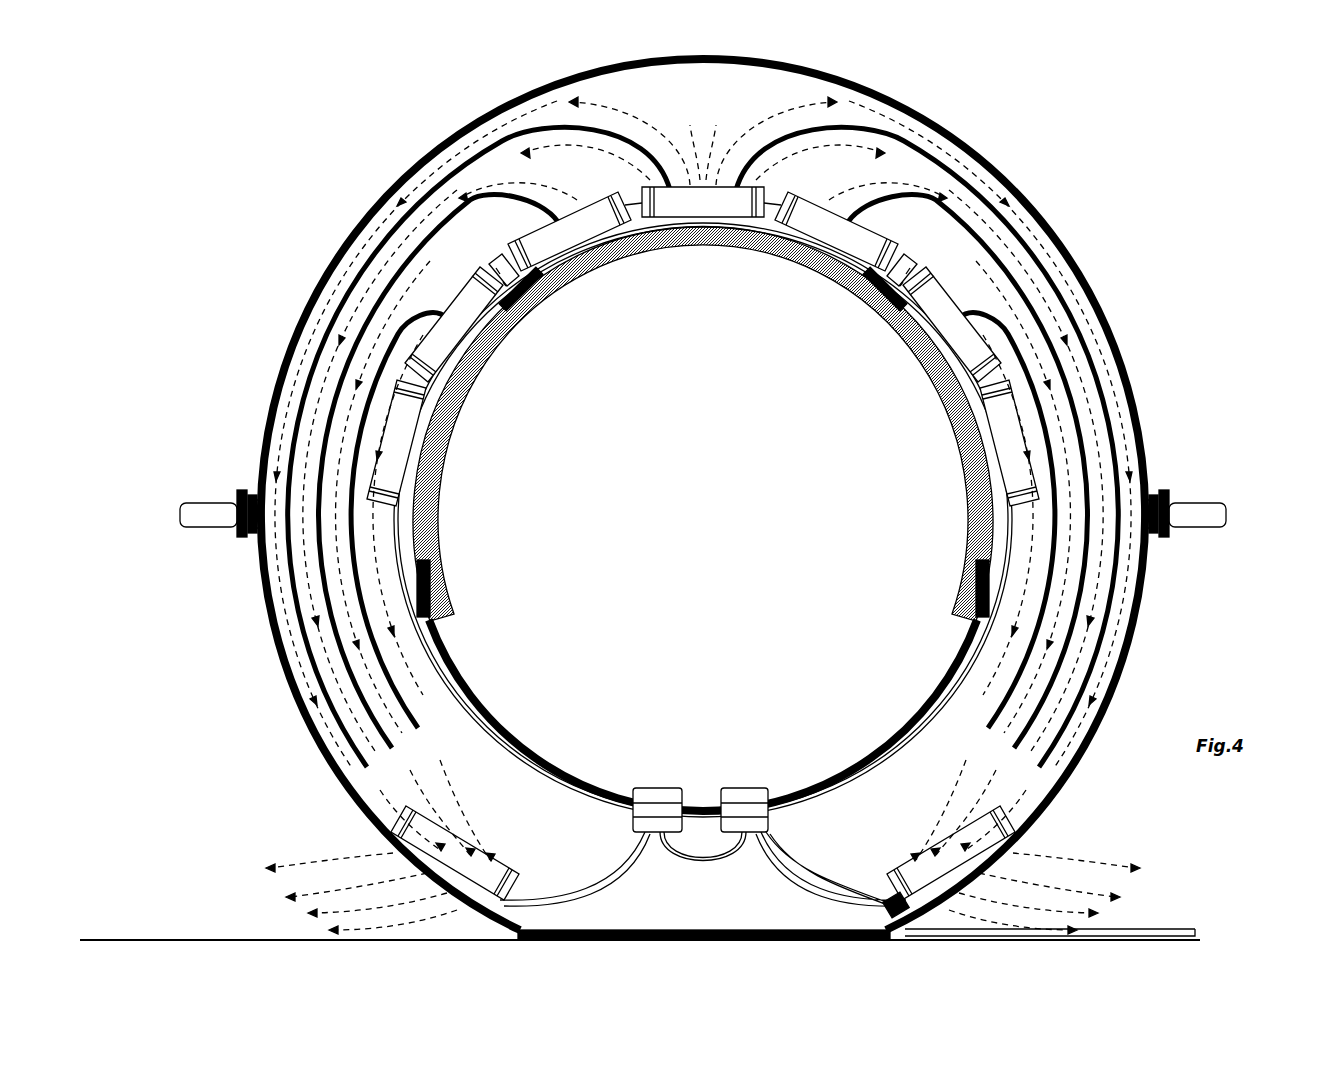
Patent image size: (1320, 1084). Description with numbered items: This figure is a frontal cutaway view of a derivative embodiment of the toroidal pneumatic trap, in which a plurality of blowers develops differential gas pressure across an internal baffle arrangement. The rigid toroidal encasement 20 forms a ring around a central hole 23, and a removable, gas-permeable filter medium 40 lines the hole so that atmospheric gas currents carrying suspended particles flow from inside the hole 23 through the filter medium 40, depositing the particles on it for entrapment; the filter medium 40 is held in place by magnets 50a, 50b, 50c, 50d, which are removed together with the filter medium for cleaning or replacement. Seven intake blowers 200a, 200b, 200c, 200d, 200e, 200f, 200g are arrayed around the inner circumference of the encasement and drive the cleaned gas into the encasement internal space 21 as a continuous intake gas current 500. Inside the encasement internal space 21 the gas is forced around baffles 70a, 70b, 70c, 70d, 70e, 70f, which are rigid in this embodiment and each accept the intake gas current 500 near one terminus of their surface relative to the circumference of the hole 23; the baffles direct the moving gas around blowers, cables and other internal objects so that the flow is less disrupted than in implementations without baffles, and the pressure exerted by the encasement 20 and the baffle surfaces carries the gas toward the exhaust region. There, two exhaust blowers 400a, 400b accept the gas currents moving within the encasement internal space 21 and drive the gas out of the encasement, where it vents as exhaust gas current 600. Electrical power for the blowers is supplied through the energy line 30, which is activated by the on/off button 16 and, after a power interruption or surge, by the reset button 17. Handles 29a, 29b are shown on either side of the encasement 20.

The toroidal encasement 20 is at (410, 165).
The encasement internal space 21 is at (691, 108).
The hole 23 is at (691, 505).
The left axle handle 29a is at (182, 514).
The right axle handle 29b is at (1224, 514).
The energy line 30 is at (1176, 929).
The filter medium 40 is at (965, 620).
The on/off button 16 is at (656, 788).
The reset button 17 is at (745, 788).
The magnet 50a is at (438, 585).
The magnet 50b is at (535, 300).
The magnet 50c is at (871, 300).
The magnet 50d is at (968, 585).
The baffle 70a is at (389, 405).
The baffle 70b is at (350, 383).
The baffle 70c is at (318, 355).
The baffle 70d is at (1017, 405).
The baffle 70e is at (1056, 383).
The baffle 70f is at (1088, 355).
The intake blower 200a is at (418, 440).
The intake blower 200b is at (478, 340).
The intake blower 200c is at (575, 242).
The intake blower 200d is at (698, 215).
The intake blower 200e is at (832, 242).
The intake blower 200f is at (928, 340).
The intake blower 200g is at (988, 440).
The exhaust blower 400a is at (412, 820).
The exhaust blower 400b is at (994, 820).
The intake gas current 500 is at (570, 100).
The exhaust gas current 600 is at (252, 920).